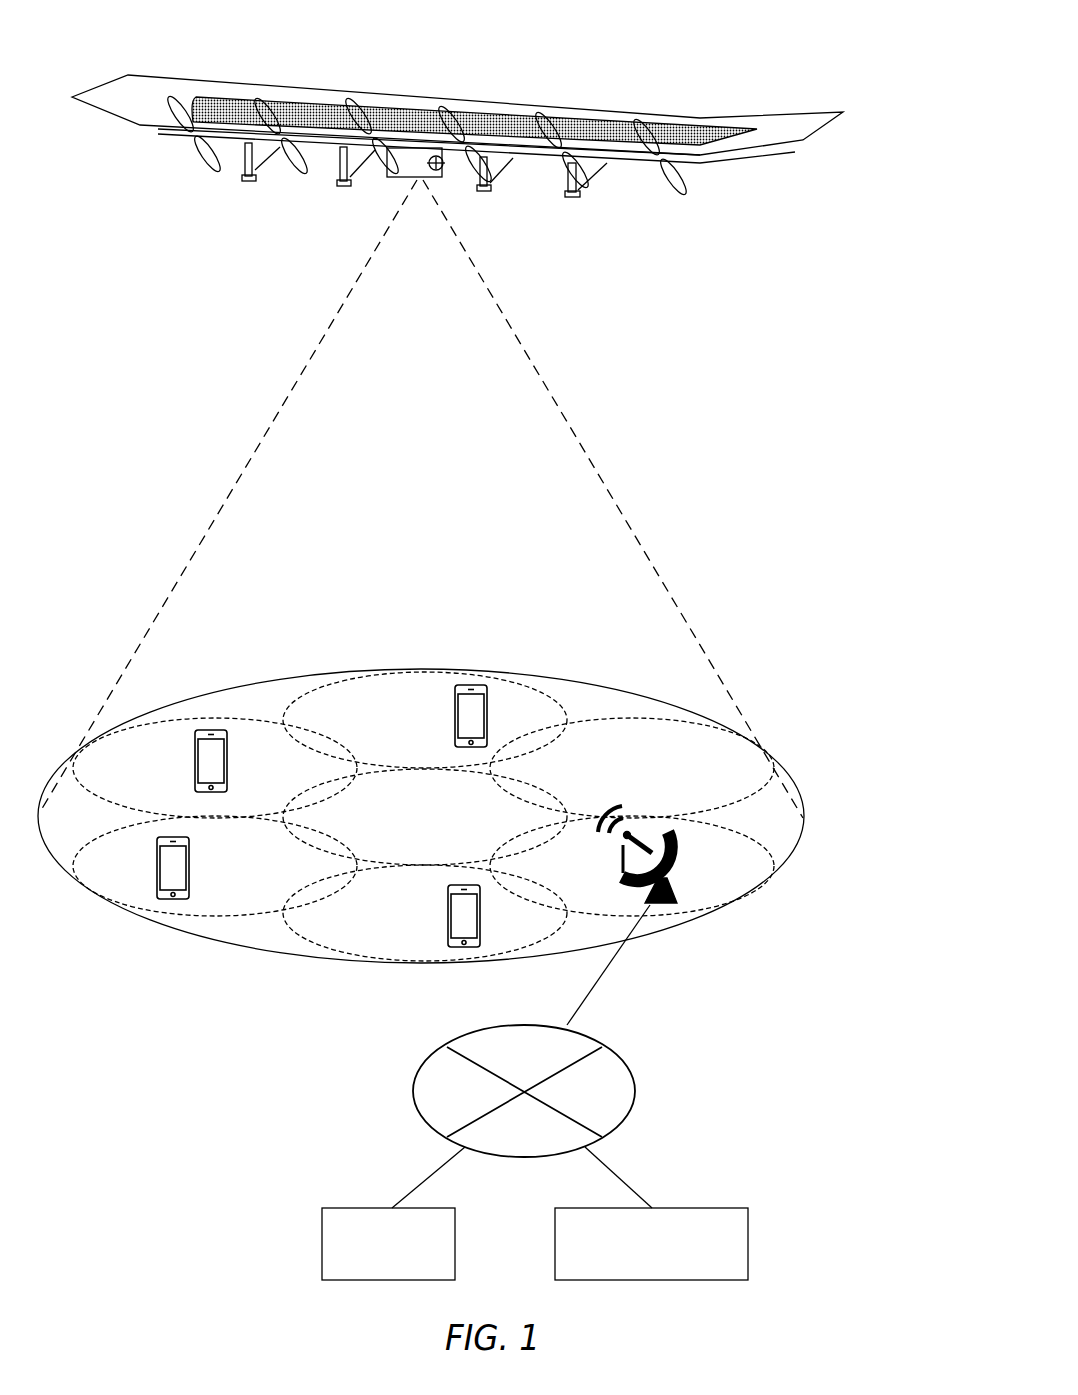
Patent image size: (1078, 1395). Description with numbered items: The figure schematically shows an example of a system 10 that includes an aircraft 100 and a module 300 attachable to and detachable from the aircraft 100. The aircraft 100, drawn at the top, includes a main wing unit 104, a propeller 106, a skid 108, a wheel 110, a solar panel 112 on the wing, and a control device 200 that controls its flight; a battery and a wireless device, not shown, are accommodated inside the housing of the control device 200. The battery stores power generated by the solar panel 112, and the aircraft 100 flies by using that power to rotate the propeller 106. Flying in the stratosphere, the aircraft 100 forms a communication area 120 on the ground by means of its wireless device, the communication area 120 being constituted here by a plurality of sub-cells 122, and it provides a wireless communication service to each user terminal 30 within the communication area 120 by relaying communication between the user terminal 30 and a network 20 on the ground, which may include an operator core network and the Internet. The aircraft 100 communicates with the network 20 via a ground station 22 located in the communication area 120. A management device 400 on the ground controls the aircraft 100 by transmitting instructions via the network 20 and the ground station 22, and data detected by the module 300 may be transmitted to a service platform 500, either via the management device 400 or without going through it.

The aircraft 100 is at (98, 23).
The system 10 is at (843, 53).
The main wing unit 104 is at (138, 88).
The solar panel 112 is at (240, 97).
The propeller 106 is at (200, 150).
The skid 108 is at (240, 155).
The wheel 110 is at (257, 174).
The control device 200 is at (413, 155).
The module 300 is at (456, 168).
The communication area 120 is at (566, 672).
The sub-cell 122 is at (425, 678).
The user terminal 30 is at (229, 756).
The ground station 22 is at (615, 857).
The network 20 is at (625, 1062).
The management device 400 is at (446, 1199).
The service platform 500 is at (726, 1199).